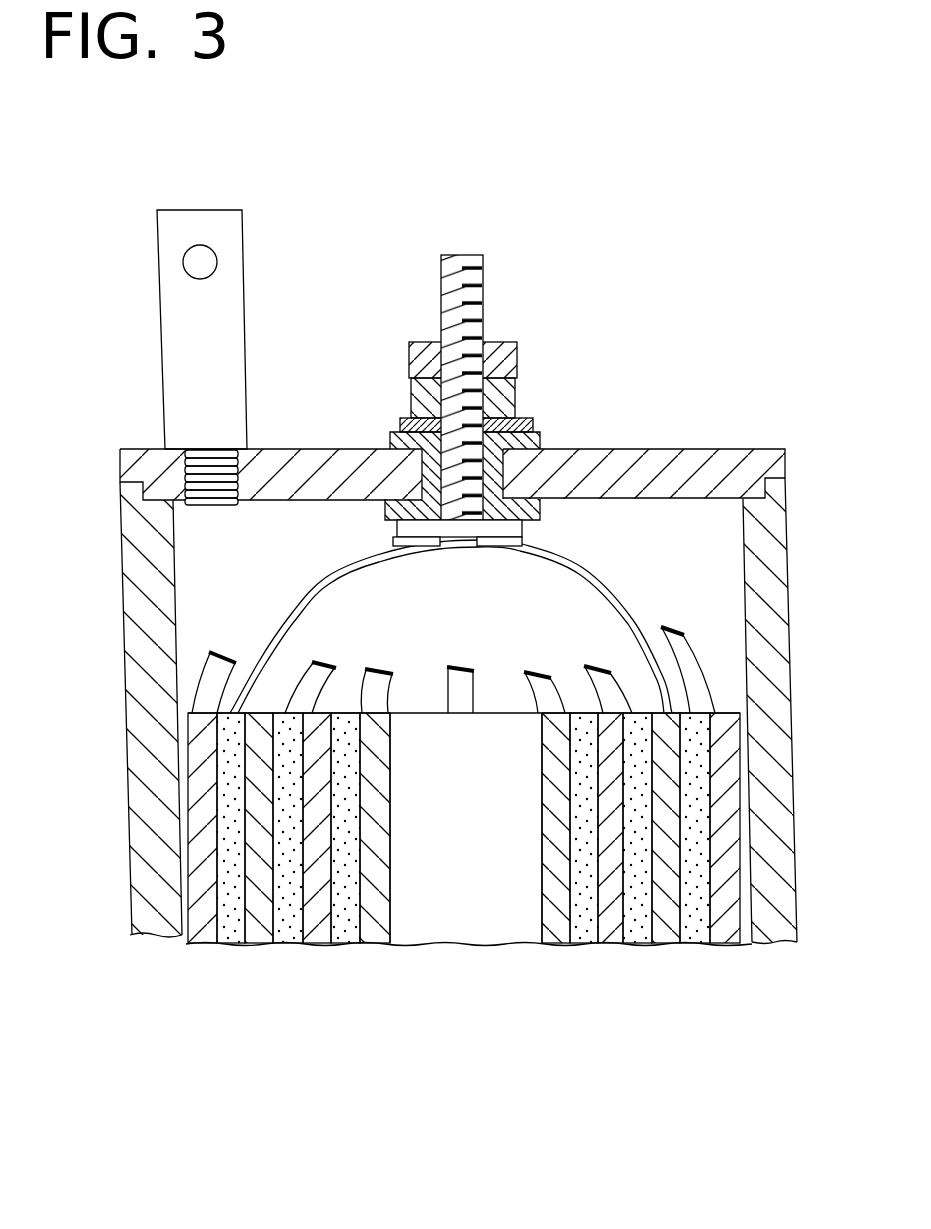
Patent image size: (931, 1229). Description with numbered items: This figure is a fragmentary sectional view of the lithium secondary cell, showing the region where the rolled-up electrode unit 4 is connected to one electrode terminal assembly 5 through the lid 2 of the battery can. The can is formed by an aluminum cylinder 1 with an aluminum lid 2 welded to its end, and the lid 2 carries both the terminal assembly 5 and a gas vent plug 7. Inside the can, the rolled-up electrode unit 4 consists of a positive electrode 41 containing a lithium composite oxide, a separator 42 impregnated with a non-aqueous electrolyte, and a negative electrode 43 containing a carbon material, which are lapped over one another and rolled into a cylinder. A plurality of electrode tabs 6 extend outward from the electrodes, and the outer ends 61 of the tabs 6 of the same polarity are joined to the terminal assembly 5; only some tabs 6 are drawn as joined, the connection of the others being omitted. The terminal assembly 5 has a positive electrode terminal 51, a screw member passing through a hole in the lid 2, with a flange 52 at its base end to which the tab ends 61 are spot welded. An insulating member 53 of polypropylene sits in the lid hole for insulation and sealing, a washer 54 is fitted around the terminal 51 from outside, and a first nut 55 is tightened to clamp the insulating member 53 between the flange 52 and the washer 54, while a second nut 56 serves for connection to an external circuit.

The aluminum cylinder 1 is at (773, 713).
The lid 2 is at (737, 459).
The rolled-up electrode unit 4 is at (471, 849).
The positive electrode 41 is at (210, 928).
The separator 42 is at (353, 928).
The negative electrode 43 is at (267, 928).
The electrode terminal assembly 5 is at (562, 207).
The positive electrode terminal 51 is at (468, 271).
The flange 52 is at (508, 532).
The insulating member 53 is at (540, 442).
The washer 54 is at (402, 422).
The first nut 55 is at (420, 410).
The second nut 56 is at (420, 342).
The electrode tab 6 is at (328, 568).
The outer end 61 is at (420, 558).
The gas vent plug 7 is at (168, 365).